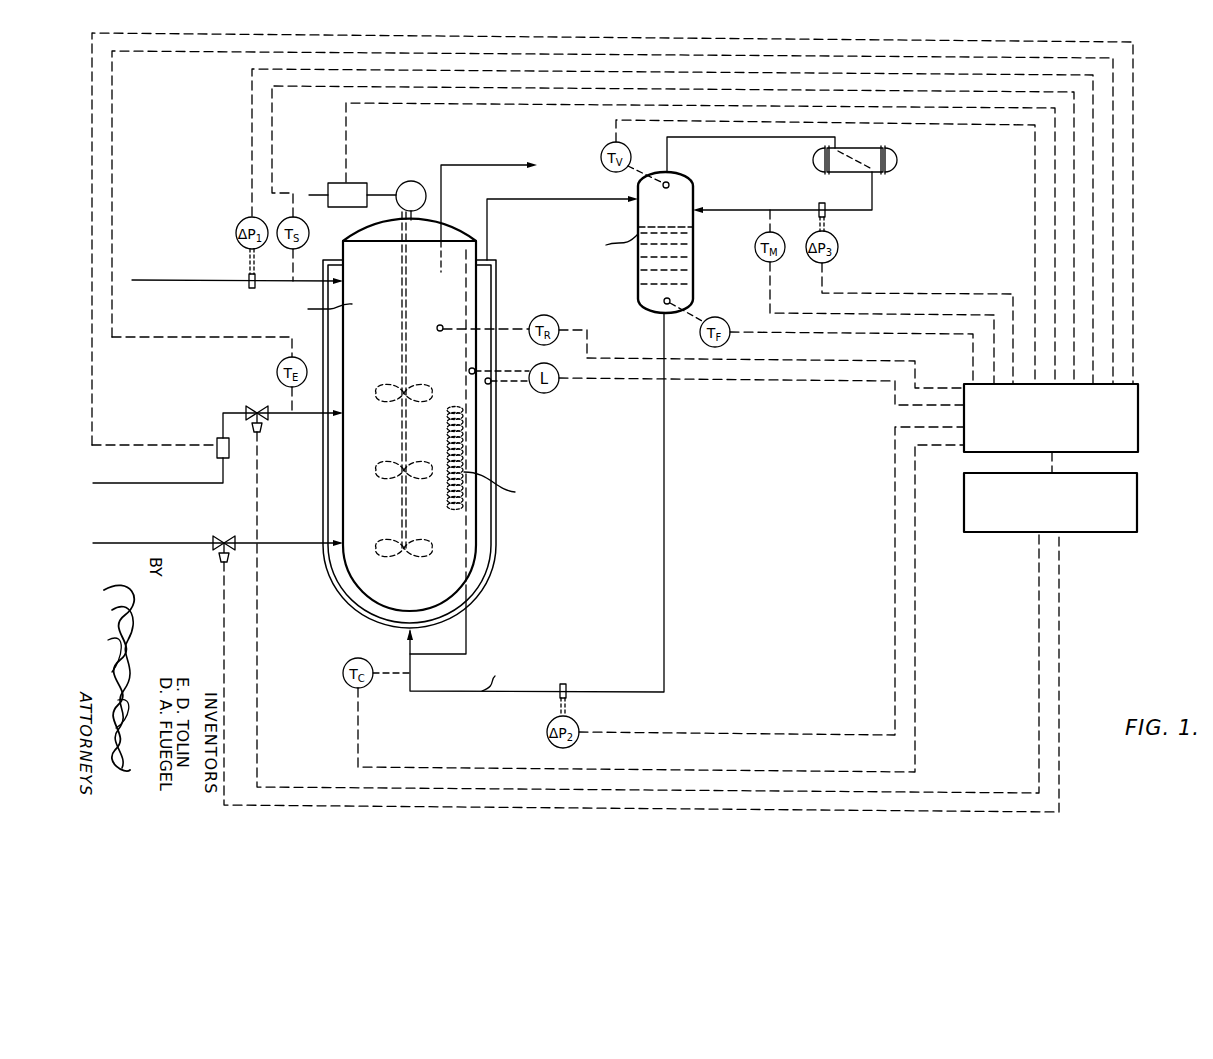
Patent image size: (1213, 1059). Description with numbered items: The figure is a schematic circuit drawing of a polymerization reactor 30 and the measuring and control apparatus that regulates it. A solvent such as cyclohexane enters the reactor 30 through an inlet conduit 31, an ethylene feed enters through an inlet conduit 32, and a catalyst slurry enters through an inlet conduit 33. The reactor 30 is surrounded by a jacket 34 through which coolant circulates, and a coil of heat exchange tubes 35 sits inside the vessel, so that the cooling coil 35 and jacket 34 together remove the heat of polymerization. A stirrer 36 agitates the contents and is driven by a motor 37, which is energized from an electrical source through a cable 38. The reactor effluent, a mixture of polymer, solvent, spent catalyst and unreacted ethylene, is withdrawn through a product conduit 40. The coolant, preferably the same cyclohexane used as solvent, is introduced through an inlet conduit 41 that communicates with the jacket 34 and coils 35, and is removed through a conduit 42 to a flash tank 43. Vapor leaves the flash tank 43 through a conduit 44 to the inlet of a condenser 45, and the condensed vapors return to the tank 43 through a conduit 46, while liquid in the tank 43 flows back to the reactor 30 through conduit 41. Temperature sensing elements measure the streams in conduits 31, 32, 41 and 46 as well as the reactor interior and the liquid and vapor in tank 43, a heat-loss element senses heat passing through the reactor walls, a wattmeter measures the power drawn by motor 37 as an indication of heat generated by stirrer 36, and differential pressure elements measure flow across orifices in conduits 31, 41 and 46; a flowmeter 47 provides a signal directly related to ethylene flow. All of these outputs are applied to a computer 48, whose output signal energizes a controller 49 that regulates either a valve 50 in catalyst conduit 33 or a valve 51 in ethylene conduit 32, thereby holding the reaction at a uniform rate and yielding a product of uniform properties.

The polymerization reactor 30 is at (383, 329).
The inlet conduit 31 is at (185, 283).
The inlet conduit 32 is at (154, 484).
The inlet conduit 33 is at (290, 542).
The jacket 34 is at (497, 462).
The coil of heat exchange tubes 35 is at (447, 490).
The stirrer 36 is at (393, 452).
The motor 37 is at (411, 181).
The cable 38 is at (380, 191).
The product conduit 40 is at (443, 184).
The inlet conduit 41 is at (481, 692).
The conduit 42 is at (541, 199).
The flash tank 43 is at (693, 268).
The conduit 44 is at (758, 137).
The condenser 45 is at (897, 162).
The conduit 46 is at (872, 202).
The flowmeter 47 is at (217, 440).
The computer 48 is at (1134, 405).
The controller 49 is at (1134, 494).
The valve 50 is at (230, 535).
The valve 51 is at (262, 405).